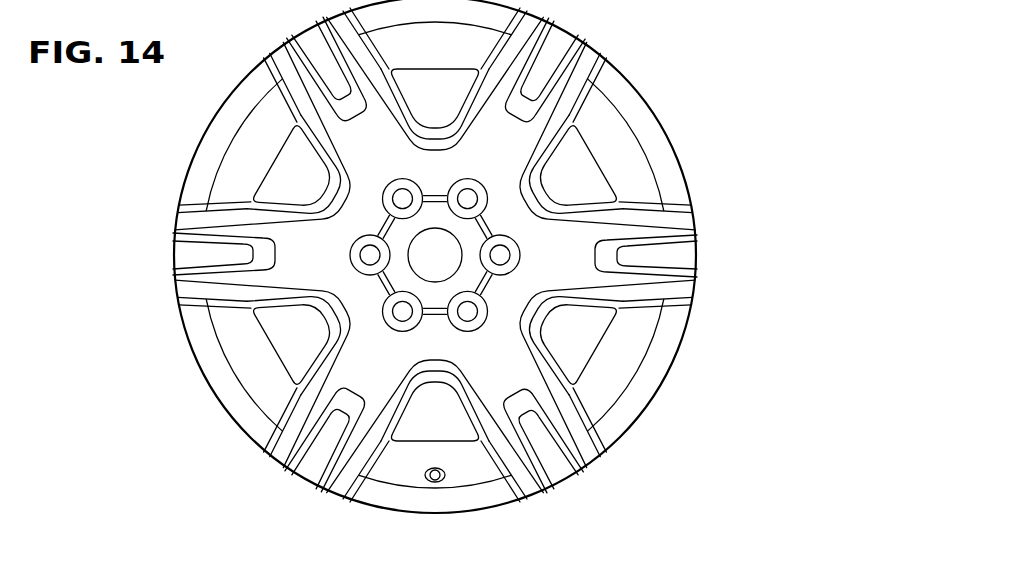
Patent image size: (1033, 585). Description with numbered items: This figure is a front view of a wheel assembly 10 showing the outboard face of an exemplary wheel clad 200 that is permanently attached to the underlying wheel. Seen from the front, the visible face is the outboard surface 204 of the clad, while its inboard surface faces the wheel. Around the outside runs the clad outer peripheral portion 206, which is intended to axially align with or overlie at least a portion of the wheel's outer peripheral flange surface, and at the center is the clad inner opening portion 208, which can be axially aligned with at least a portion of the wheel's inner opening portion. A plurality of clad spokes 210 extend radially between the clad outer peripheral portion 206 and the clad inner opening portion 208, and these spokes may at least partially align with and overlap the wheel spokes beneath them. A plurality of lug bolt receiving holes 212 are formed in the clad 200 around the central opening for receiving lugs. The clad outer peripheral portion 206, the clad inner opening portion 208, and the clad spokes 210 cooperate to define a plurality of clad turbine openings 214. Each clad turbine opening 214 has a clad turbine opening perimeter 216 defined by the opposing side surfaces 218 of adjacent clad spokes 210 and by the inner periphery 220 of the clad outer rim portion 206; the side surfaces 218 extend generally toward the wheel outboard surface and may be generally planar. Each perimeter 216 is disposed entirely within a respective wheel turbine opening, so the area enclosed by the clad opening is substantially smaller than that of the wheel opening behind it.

The wheel assembly 10 is at (625, 54).
The wheel clad 200 is at (655, 388).
The outboard surface 204 is at (690, 190).
The clad outer peripheral portion 206 is at (690, 318).
The clad inner opening portion 208 is at (468, 226).
The clad spokes 210 is at (313, 476).
The lug bolt receiving holes 212 is at (372, 254).
The clad turbine openings 214 is at (430, 90).
The clad turbine opening perimeter 216 is at (467, 413).
The side surfaces 218 is at (556, 133).
The inner periphery 220 is at (602, 164).